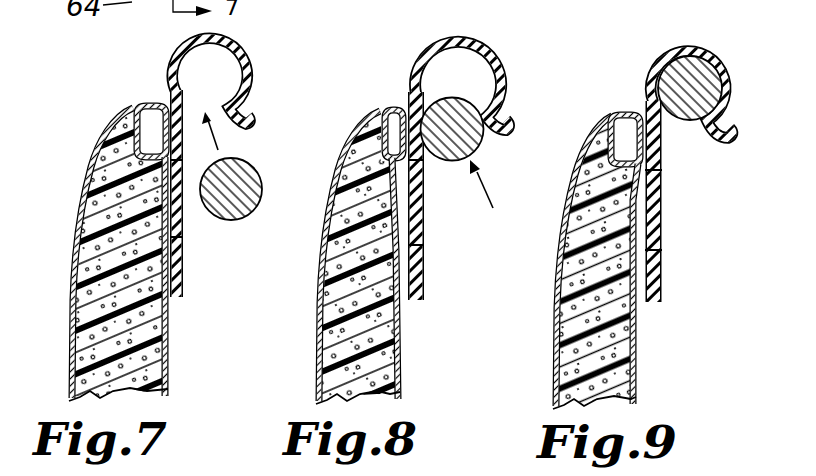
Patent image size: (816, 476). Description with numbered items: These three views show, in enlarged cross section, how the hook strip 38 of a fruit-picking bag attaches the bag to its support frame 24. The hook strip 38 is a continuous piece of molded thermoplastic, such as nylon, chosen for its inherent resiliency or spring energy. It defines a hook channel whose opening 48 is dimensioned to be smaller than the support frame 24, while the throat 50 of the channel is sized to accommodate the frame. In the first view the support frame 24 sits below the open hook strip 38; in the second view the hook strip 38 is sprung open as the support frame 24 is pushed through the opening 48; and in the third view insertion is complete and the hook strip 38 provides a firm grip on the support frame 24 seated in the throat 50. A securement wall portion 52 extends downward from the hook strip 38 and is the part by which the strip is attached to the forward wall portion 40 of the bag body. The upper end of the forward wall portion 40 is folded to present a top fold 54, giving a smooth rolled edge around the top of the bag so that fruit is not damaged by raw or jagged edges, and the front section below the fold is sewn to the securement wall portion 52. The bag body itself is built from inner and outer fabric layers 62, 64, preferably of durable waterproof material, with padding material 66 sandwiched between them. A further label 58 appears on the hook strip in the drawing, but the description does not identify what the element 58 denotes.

In FIG. 7, the glass pane / rod member 24 is at (250, 182).
In FIG. 8, the glass pane / rod member 24 is at (456, 161).
In FIG. 9, the glass pane / rod member 24 is at (686, 125).
In FIG. 7, the hook-shaped retaining loop 38 is at (209, 161).
In FIG. 8, the hook-shaped retaining loop 38 is at (487, 150).
In FIG. 9, the hook-shaped retaining loop 38 is at (708, 156).
In FIG. 7, the seal body 40 is at (124, 248).
In FIG. 8, the seal body 40 is at (366, 233).
In FIG. 9, the seal body 40 is at (601, 242).
In FIG. 7, the upper stem portion of loop 48 is at (191, 112).
In FIG. 7, the opening of retaining loop 50 is at (197, 70).
In FIG. 7, the stem strip 52 is at (183, 226).
In FIG. 8, the stem strip 52 is at (424, 268).
In FIG. 9, the stem strip 52 is at (662, 235).
In FIG. 7, the hollow lip of seal body 54 is at (132, 107).
In FIG. 8, the hollow lip of seal body 54 is at (382, 110).
In FIG. 9, the hollow lip of seal body 54 is at (620, 118).
In FIG. 8, the loop end 58 is at (448, 68).
In FIG. 7, the outer skin 62 is at (72, 363).
In FIG. 8, the outer skin 62 is at (317, 360).
In FIG. 9, the outer skin 62 is at (552, 387).
In FIG. 7, the inner skin layer 64 is at (166, 318).
In FIG. 8, the inner skin layer 64 is at (400, 333).
In FIG. 9, the inner skin layer 64 is at (637, 338).
In FIG. 7, the foam core 66 is at (97, 322).
In FIG. 8, the foam core 66 is at (337, 328).
In FIG. 9, the foam core 66 is at (580, 362).